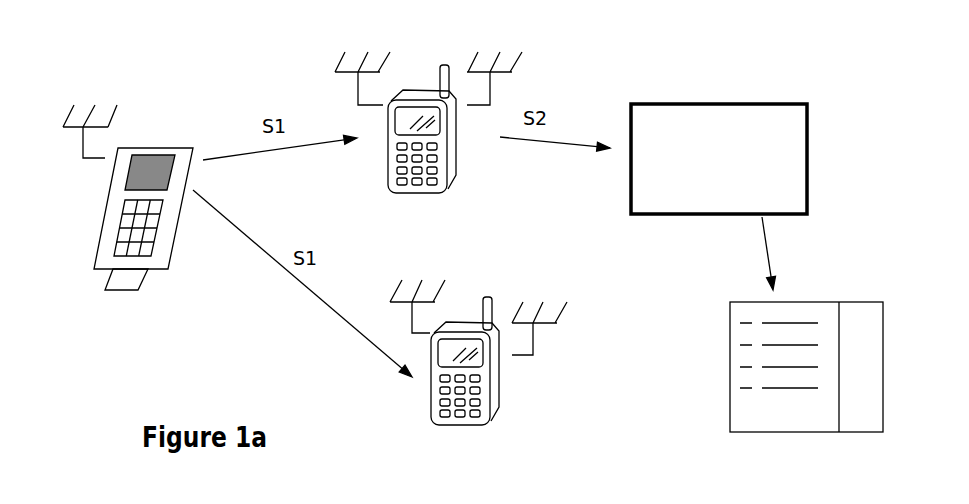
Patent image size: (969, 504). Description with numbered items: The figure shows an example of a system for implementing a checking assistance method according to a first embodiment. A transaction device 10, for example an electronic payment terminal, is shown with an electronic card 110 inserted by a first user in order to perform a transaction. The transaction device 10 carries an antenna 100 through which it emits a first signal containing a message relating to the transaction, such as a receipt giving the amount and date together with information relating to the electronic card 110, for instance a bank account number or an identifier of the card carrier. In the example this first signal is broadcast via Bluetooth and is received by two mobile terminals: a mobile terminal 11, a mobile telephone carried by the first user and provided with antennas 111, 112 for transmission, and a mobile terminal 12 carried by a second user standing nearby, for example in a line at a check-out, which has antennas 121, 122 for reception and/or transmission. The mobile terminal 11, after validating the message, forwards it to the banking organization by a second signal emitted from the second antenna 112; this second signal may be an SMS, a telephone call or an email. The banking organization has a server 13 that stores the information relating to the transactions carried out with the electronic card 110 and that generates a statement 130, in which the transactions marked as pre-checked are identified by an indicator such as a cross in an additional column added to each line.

The transaction device 10 is at (148, 140).
The antenna 100 is at (100, 105).
The electronic card 110 is at (120, 292).
The mobile terminal 11 is at (418, 90).
The antenna 111 is at (373, 50).
The second antenna 112 is at (510, 52).
The mobile terminal 12 is at (460, 320).
The antenna 121 is at (428, 280).
The antenna 122 is at (532, 302).
The server 13 is at (713, 217).
The statement 130 is at (723, 378).